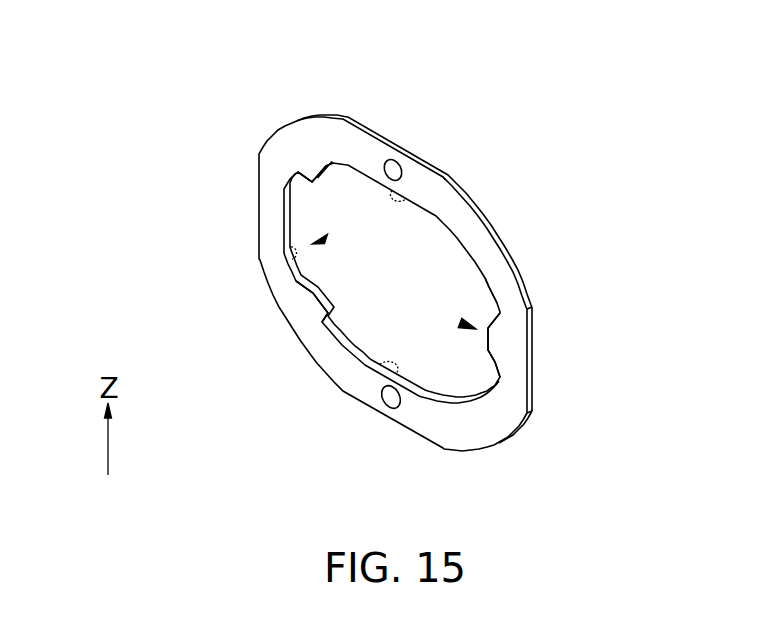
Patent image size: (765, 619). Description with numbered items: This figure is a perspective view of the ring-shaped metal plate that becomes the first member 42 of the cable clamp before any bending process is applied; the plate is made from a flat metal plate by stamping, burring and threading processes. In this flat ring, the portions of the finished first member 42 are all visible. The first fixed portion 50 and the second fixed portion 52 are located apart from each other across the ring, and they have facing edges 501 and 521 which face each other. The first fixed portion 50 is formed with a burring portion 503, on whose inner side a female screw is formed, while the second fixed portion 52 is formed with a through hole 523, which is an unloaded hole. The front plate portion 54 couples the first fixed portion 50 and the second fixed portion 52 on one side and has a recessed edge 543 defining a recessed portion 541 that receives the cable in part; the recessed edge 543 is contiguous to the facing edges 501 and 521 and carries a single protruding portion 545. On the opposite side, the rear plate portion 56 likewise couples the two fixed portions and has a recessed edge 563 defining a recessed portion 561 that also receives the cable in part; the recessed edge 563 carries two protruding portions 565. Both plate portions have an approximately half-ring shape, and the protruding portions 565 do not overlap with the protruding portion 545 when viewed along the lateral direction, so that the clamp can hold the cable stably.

The first member 42 is at (381, 43).
The first fixed portion 50 is at (381, 148).
The second fixed portion 52 is at (408, 415).
The front plate portion 54 is at (493, 254).
The rear plate portion 56 is at (273, 232).
The facing edge 501 is at (401, 201).
The burring portion 503 is at (398, 162).
The facing edge 521 is at (394, 362).
The through hole 523 is at (380, 400).
The recessed portion 541 is at (470, 326).
The recessed edge 543 is at (476, 293).
The protruding portion 545 is at (497, 342).
The recessed portion 561 is at (325, 239).
The recessed edge 563 is at (286, 277).
The protruding portions 565 is at (302, 172).